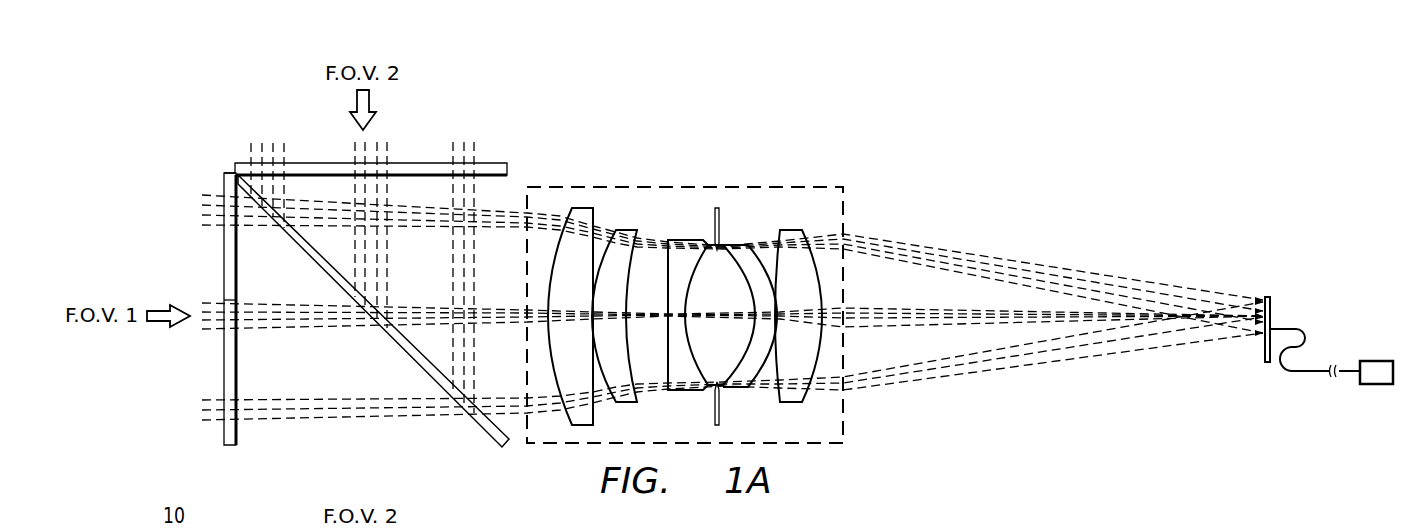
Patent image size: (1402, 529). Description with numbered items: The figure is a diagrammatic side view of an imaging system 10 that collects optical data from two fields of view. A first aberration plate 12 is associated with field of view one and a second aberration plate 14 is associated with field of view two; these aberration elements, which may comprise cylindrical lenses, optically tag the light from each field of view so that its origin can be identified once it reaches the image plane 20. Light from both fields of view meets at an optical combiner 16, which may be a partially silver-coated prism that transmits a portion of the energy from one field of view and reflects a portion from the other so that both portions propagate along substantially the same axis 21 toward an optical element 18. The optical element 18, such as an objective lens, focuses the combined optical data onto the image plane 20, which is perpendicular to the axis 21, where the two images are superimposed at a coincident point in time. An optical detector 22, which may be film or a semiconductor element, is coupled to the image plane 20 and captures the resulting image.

The imaging system 10 is at (205, 115).
The first aberration plate 12 is at (222, 358).
The second aberration plate 14 is at (490, 163).
The optical combiner 16 is at (400, 349).
The optical element 18 is at (752, 187).
The image plane 20 is at (1262, 347).
The axis 21 is at (215, 299).
The optical detector 22 is at (1378, 361).